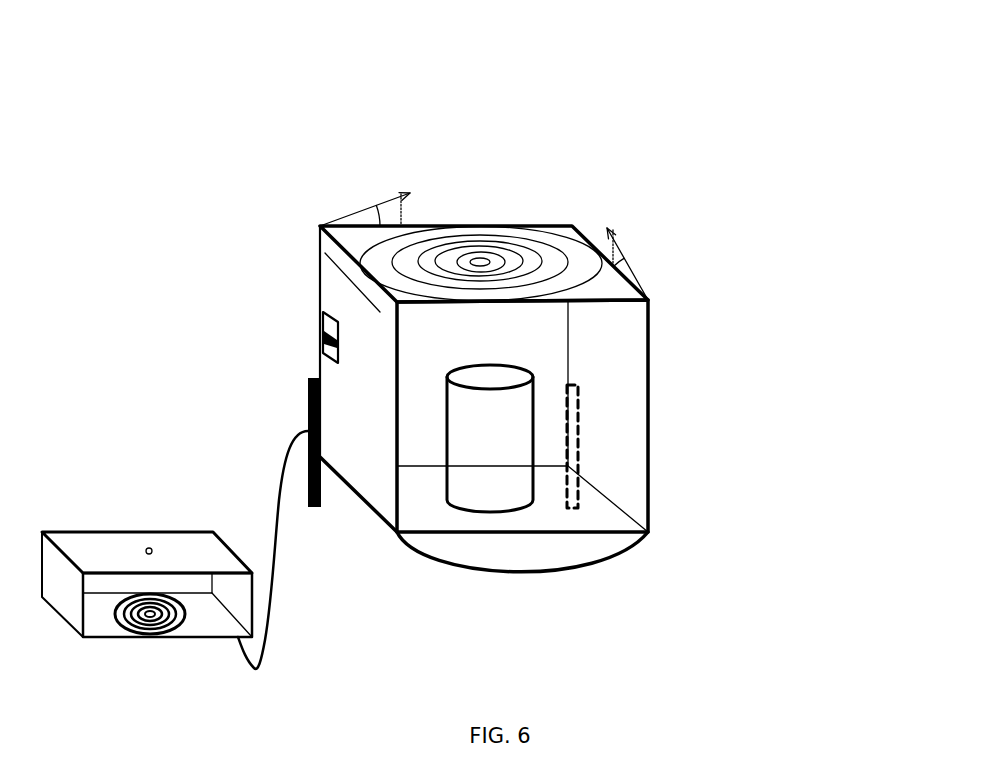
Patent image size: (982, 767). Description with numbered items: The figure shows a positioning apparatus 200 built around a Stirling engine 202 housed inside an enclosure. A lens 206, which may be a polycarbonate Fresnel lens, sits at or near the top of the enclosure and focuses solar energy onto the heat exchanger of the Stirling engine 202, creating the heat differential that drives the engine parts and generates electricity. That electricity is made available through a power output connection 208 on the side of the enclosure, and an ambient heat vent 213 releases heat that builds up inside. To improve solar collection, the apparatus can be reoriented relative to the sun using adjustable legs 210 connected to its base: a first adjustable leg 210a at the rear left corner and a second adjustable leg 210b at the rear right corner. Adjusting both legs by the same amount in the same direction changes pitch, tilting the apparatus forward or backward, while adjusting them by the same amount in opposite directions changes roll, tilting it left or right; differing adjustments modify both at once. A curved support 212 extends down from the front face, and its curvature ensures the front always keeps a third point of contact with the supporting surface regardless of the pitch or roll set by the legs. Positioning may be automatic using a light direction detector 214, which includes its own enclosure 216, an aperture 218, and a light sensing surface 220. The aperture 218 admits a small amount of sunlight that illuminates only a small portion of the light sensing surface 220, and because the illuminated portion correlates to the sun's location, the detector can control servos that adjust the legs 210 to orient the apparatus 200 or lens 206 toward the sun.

The positioning apparatus 200 is at (497, 84).
The Stirling engine 202 is at (540, 387).
The lens 206 is at (558, 250).
The power output connection 208 is at (308, 323).
The adjustable legs 210 is at (490, 428).
The first adjustable leg 210a is at (300, 412).
The second adjustable leg 210b is at (577, 457).
The curved support 212 is at (582, 553).
The ambient heat vent 213 is at (310, 248).
The light direction detector 214 is at (203, 664).
The enclosure 216 is at (80, 558).
The aperture 218 is at (148, 547).
The light sensing surface 220 is at (148, 592).